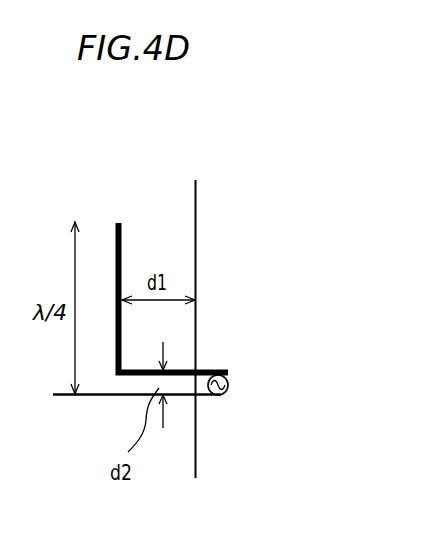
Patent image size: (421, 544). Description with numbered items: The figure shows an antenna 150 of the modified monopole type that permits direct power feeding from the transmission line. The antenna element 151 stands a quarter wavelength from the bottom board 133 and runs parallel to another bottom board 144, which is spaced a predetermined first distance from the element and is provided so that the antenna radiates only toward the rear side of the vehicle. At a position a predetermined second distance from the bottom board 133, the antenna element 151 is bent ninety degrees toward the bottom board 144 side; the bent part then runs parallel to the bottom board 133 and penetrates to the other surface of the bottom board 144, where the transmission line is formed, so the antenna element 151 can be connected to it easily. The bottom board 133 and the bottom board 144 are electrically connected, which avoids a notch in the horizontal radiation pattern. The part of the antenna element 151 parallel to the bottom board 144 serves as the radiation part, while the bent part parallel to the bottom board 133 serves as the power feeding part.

The antenna 150 is at (149, 185).
The antenna element 151 is at (113, 252).
The bottom board 144 is at (196, 222).
The bottom board 133 is at (97, 396).